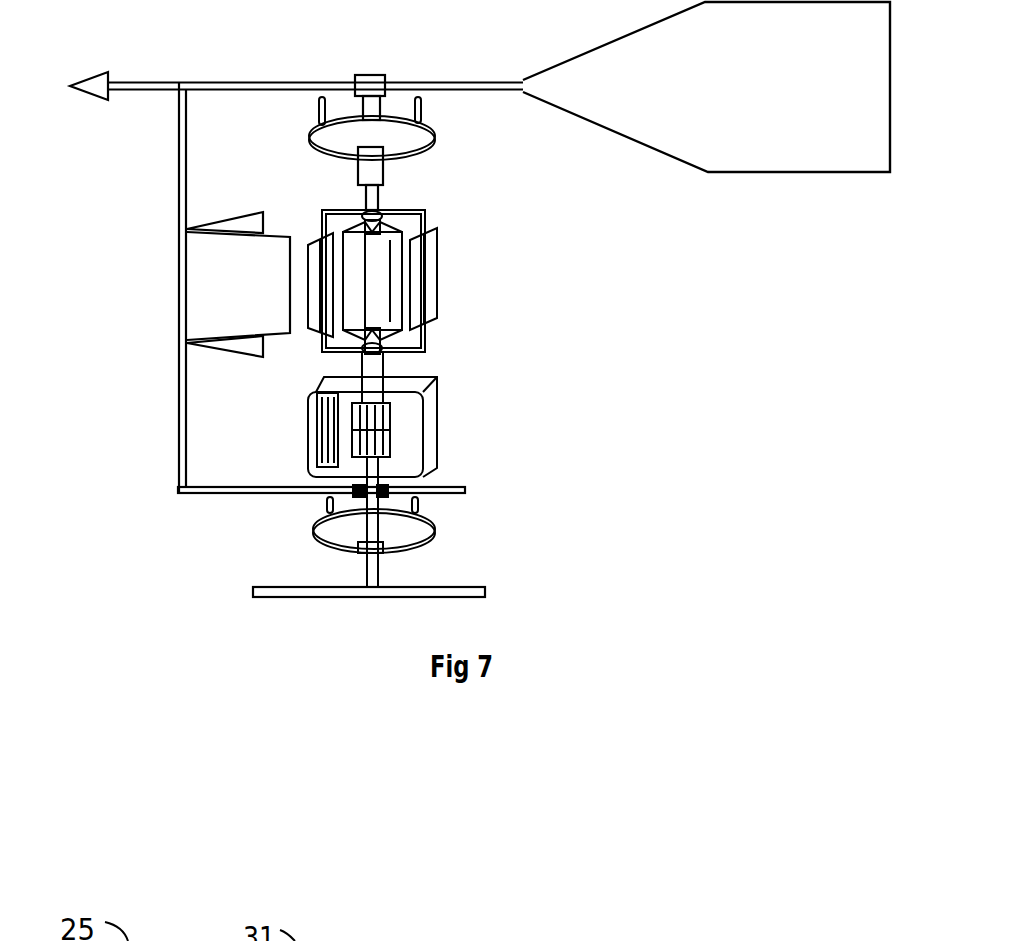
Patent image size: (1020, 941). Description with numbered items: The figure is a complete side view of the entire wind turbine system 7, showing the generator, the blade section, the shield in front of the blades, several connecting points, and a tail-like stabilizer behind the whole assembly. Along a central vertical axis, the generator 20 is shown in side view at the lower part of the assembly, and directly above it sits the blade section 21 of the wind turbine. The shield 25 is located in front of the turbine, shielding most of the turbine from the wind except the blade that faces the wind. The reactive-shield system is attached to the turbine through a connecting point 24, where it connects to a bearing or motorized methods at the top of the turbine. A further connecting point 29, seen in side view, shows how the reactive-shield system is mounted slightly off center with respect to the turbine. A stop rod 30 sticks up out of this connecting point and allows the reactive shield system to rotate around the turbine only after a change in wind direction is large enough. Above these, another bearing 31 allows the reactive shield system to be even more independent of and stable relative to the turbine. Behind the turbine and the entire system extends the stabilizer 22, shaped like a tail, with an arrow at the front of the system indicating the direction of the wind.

The generator assembly 7 is at (500, 545).
The generator 20 is at (425, 433).
The blade section 21 is at (405, 279).
The stabilizer 22 is at (792, 142).
The connecting point 24 is at (364, 173).
The shield 25 is at (203, 297).
The connecting point 29 is at (435, 140).
The stop rod 30 is at (318, 115).
The bearing 31 is at (366, 84).